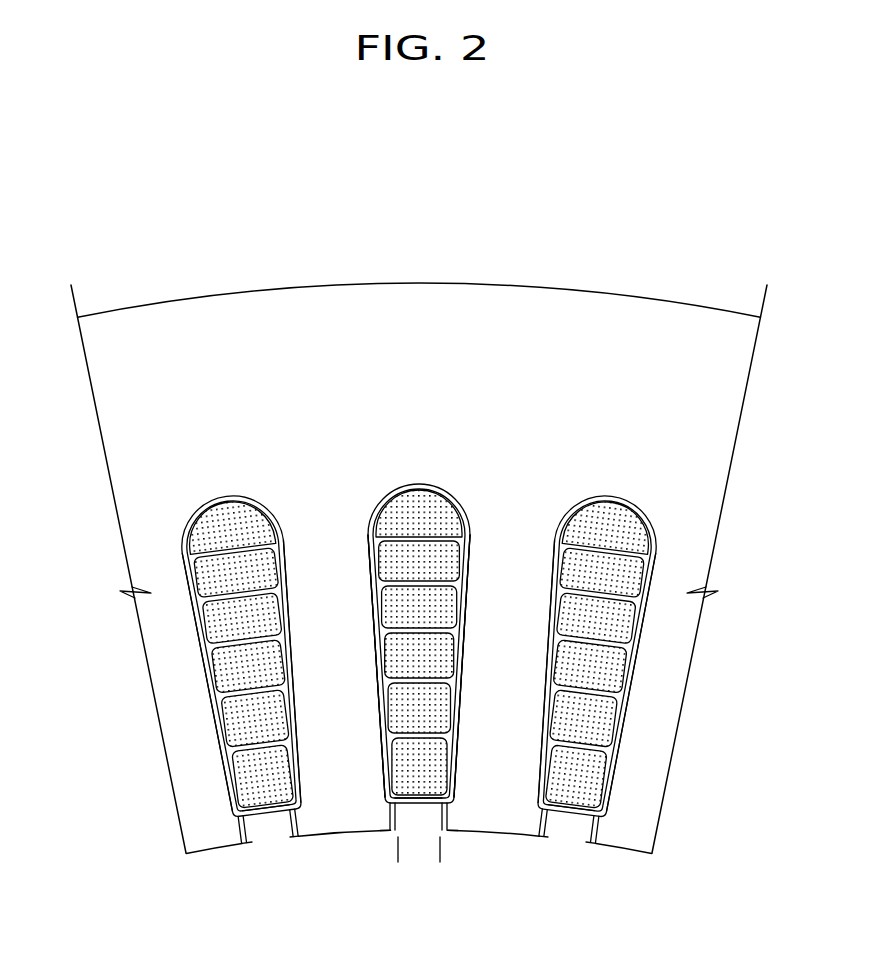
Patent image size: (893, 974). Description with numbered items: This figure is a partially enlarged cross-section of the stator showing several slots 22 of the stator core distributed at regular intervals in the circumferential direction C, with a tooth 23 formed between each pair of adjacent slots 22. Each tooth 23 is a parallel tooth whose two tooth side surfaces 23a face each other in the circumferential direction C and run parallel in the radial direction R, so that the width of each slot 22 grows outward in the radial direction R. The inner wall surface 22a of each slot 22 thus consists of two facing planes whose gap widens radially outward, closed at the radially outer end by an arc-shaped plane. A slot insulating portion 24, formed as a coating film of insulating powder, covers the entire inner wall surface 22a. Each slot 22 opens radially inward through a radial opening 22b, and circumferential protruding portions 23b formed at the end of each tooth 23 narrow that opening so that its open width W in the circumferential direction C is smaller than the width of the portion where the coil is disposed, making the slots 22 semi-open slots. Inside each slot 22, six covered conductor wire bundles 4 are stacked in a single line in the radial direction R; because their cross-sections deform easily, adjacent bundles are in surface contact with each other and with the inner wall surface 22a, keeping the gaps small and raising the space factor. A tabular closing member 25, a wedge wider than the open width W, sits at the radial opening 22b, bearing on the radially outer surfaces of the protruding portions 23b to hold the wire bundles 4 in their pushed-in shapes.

The slot 22 is at (425, 669).
The slot insulating portion 24 is at (231, 492).
The covered conductor wire bundle 4 is at (213, 667).
The inner wall surface 22a is at (637, 738).
The tooth side surface 23a is at (420, 666).
The radial opening 22b is at (421, 820).
The tooth 23 is at (328, 832).
The circumferential protruding portion 23b is at (233, 840).
The closing member 25 is at (397, 818).
The open width W is at (400, 847).
The circumferential direction C is at (496, 257).
The radial direction R is at (753, 616).